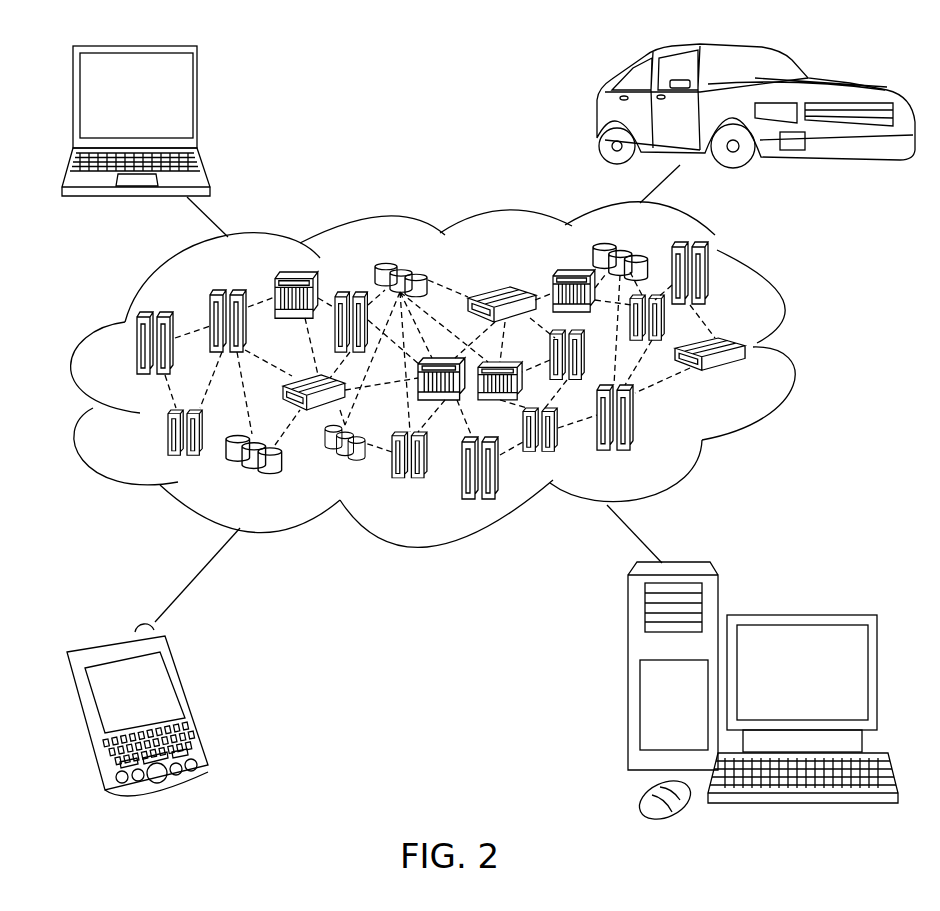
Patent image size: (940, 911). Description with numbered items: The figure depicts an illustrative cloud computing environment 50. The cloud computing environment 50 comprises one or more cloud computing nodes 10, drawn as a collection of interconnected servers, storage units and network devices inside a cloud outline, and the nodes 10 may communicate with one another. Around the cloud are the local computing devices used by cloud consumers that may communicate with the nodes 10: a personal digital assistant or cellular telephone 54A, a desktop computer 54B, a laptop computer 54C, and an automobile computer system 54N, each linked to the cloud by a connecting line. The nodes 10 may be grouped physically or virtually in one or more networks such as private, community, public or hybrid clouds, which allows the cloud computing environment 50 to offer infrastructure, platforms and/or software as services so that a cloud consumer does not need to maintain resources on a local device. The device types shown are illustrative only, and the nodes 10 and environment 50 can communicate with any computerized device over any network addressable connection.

The cloud computing node 10 is at (752, 382).
The cloud computing environment 50 is at (800, 352).
The personal digital assistant (PDA) or cellular telephone 54A is at (190, 700).
The desktop computer 54B is at (800, 613).
The laptop computer 54C is at (197, 102).
The automobile computer system 54N is at (598, 112).